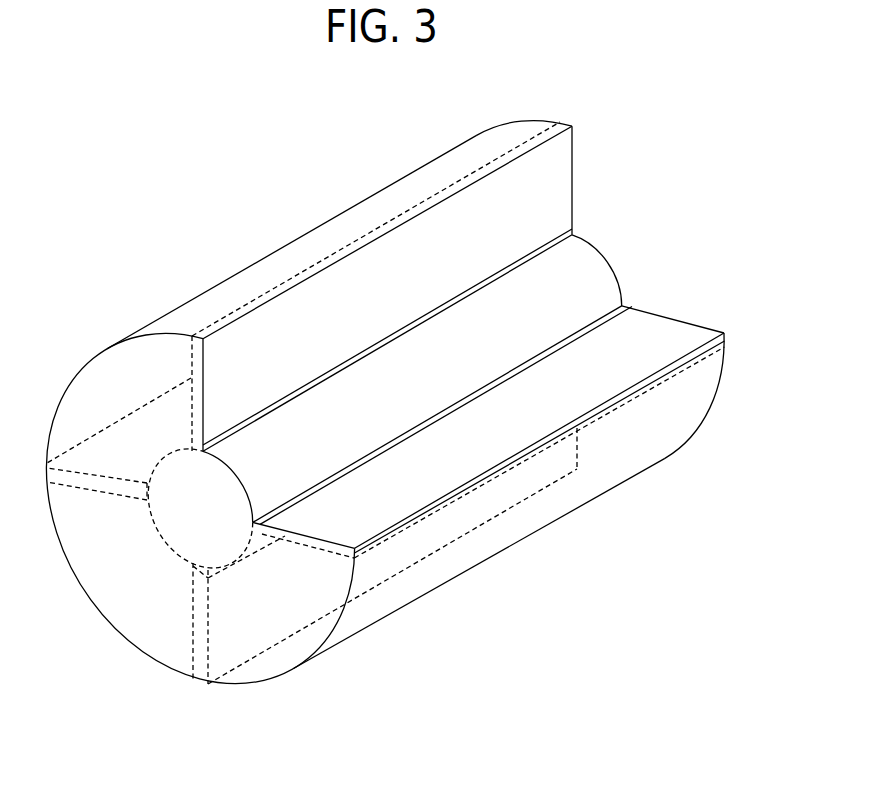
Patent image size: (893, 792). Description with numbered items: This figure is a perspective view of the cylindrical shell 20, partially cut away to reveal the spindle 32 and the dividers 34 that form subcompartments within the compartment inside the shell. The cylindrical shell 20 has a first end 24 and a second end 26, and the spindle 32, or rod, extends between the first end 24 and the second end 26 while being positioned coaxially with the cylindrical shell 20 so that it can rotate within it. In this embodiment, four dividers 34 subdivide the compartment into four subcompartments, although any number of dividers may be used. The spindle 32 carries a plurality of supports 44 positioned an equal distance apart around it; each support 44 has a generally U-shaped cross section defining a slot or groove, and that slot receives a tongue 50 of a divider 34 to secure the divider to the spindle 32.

The cylindrical shell 20 is at (507, 547).
The first end 24 is at (143, 622).
The second end 26 is at (720, 380).
The spindle 32 is at (182, 515).
The divider 34 is at (380, 230).
The support 44 is at (259, 527).
The tongue 50 is at (280, 537).